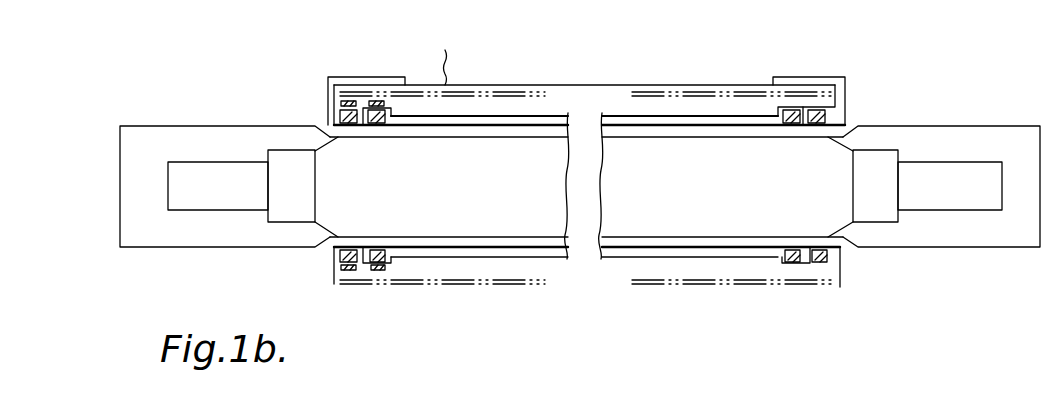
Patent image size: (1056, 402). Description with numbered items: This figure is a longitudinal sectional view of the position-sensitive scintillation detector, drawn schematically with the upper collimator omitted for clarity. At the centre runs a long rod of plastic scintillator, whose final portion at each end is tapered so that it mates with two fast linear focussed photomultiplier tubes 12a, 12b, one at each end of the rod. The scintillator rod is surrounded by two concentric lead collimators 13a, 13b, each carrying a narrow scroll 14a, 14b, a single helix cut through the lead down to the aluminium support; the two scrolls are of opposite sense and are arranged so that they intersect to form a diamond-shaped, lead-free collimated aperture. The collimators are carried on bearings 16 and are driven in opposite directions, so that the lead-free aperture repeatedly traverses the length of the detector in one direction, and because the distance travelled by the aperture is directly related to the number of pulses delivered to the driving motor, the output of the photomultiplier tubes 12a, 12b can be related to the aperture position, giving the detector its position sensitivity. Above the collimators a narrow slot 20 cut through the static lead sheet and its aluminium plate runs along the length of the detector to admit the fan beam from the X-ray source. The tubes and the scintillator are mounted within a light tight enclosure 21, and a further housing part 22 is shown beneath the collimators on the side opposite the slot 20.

The photomultiplier tube 12a is at (210, 188).
The photomultiplier tube 12b is at (666, 171).
The lead collimator 13a is at (475, 248).
The lead collimator 13b is at (528, 258).
The scroll 14a is at (762, 123).
The scroll 14b is at (408, 112).
The bearings 16 is at (380, 271).
The slot 20 is at (670, 85).
The light tight enclosure 21 is at (207, 252).
The housing part 22 is at (450, 289).